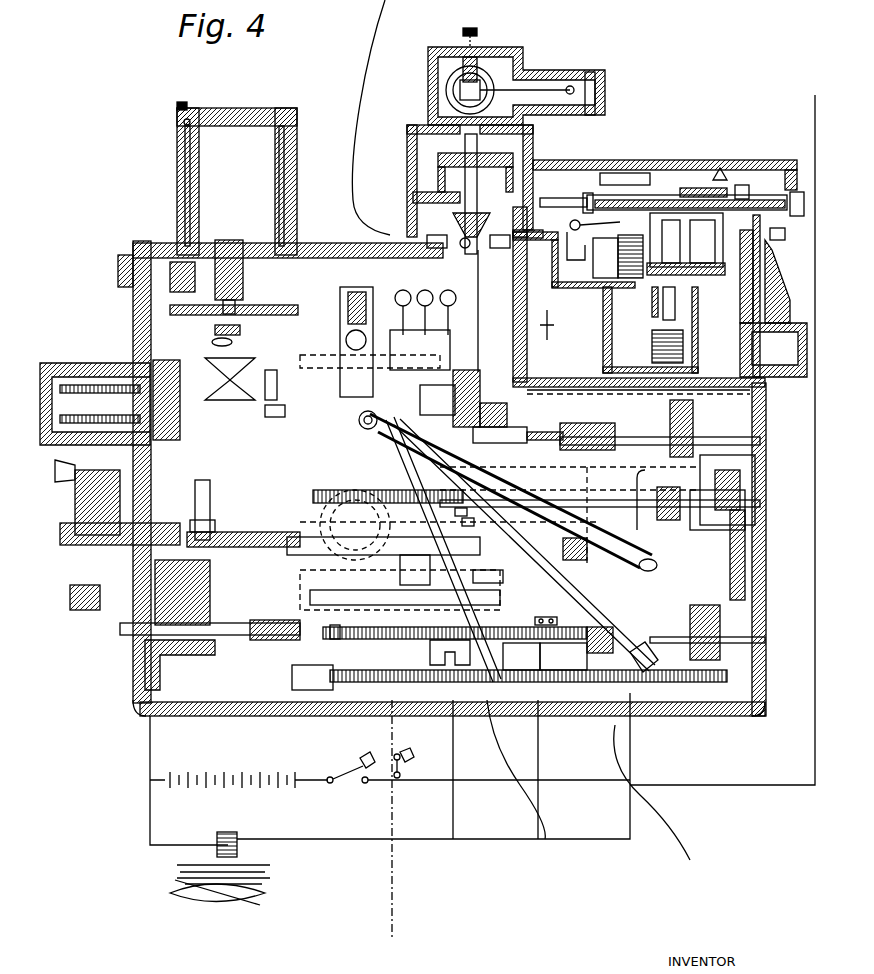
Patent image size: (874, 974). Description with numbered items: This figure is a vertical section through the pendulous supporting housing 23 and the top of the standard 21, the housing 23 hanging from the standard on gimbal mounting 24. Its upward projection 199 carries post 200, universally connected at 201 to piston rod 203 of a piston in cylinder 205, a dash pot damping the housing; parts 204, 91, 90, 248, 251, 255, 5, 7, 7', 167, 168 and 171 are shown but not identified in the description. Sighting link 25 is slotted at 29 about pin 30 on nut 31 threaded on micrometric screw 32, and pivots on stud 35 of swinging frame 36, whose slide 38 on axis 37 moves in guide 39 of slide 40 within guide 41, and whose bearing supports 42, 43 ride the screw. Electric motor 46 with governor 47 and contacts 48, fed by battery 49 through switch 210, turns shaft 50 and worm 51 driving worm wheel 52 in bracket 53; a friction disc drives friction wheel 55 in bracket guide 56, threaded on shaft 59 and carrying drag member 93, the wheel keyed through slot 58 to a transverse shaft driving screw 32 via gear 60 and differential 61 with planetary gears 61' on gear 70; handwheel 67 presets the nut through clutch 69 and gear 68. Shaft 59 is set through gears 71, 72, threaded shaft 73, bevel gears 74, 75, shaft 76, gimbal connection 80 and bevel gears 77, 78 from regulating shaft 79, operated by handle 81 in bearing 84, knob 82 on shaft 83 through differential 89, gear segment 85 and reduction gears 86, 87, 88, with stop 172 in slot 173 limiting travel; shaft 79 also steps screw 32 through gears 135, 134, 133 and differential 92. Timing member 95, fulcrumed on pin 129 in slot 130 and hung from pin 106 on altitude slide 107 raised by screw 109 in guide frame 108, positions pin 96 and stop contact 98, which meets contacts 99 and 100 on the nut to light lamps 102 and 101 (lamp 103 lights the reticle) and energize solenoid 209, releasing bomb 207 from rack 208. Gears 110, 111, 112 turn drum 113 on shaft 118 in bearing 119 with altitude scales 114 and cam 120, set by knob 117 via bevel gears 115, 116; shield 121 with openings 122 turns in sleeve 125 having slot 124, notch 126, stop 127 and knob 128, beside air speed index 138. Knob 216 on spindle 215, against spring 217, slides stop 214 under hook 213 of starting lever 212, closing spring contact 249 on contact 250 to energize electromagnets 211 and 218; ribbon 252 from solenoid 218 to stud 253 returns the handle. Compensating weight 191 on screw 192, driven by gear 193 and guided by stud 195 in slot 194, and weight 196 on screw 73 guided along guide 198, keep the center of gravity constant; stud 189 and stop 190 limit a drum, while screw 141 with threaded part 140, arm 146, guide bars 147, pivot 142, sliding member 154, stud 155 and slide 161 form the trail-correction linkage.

The adjusting knob 201 is at (486, 78).
The connecting rod 203 is at (530, 88).
The piston 204 is at (600, 80).
The pressure gauge 200 is at (452, 95).
The cylinder 205 is at (606, 96).
The housing wall 199 is at (407, 145).
The valve housing 21 is at (534, 142).
The diaphragm 78 is at (530, 154).
The plate 250 is at (612, 172).
The cover plate 214 is at (628, 160).
The plate 249 is at (652, 172).
The wedge 88 is at (720, 170).
The lever 172 is at (730, 175).
The lever 173 is at (735, 188).
The plate 84 is at (700, 188).
The block 91 is at (745, 185).
The spring 217 is at (770, 195).
The shaft 215 is at (780, 195).
The knob 216 is at (800, 195).
The bracket 90 is at (785, 237).
The rod 83 is at (762, 268).
The arm 81 is at (775, 290).
The arm 89 is at (778, 312).
The bearing housing 82 is at (780, 378).
The wall 77 is at (405, 212).
The wall 110 is at (407, 228).
The valve 24 is at (460, 245).
The valve stem 80 is at (478, 250).
The pipe 79 is at (560, 198).
The bracket 212 is at (588, 193).
The arm 248 is at (570, 224).
The coil 213 is at (620, 250).
The solenoid 211 is at (620, 268).
The contact 251 is at (670, 240).
The relay 85 is at (693, 232).
The contact 253 is at (690, 245).
The plate 86 is at (680, 275).
The armature 252 is at (652, 300).
The plunger 87 is at (652, 310).
The coil 218 is at (652, 347).
The shaft 5 is at (547, 337).
The partition wall 23 is at (527, 378).
The rod 76 is at (479, 311).
The lamp 103 is at (403, 290).
The lamp 102 is at (429, 287).
The lamp 101 is at (454, 287).
The spring 108 is at (348, 295).
The housing 109 is at (345, 305).
The plunger 107 is at (342, 320).
The roller 106 is at (346, 340).
The plate 41 is at (330, 357).
The lever 95 is at (385, 380).
The bracket 38 is at (415, 370).
The block 39 is at (426, 395).
The bearing block 75 is at (482, 395).
The bar 198 is at (533, 394).
The bearing 72 is at (685, 407).
The shaft 74 is at (498, 443).
The threaded shaft 196 is at (550, 442).
The shaft 73 is at (623, 448).
The gear 71 is at (678, 495).
The clutch 92 is at (745, 480).
The bearing 133 is at (756, 480).
The bracket 134 is at (746, 530).
The bracket 135 is at (745, 615).
The bearing 193 is at (755, 690).
The cap 128 is at (295, 108).
The screw 127 is at (180, 122).
The flange 126 is at (182, 135).
The sleeve 114 is at (182, 168).
The inner wall 122 is at (180, 182).
The outer wall 124 is at (177, 215).
The cylinder head 125 is at (297, 138).
The cylinder 121 is at (297, 182).
The bore 113 is at (198, 230).
The passage 115 is at (212, 255).
The piston 118 is at (230, 242).
The passage 111 is at (300, 245).
The valve 112 is at (283, 258).
The valve 116 is at (190, 281).
The piston rod 119 is at (236, 305).
The fitting 117 is at (120, 258).
The clutch housing 138 is at (45, 363).
The spring 189 is at (68, 373).
The shaft 7 is at (77, 351).
The bar 120 is at (170, 315).
The disc 167 is at (222, 340).
The block 168 is at (240, 330).
The arm 171 is at (285, 300).
The valve 154 is at (210, 368).
The disc 155 is at (272, 390).
The plate 40 is at (290, 385).
The shaft 7' is at (284, 380).
The disc 142 is at (285, 412).
The lever 37 is at (300, 433).
The lever 36 is at (300, 456).
The pivot 35 is at (365, 430).
The gear 140 is at (72, 394).
The gear 190 is at (94, 394).
The gear 141 is at (122, 394).
The block 146 is at (180, 430).
The block 147 is at (175, 445).
The rod 161 is at (240, 415).
The shaft 68 is at (165, 495).
The bearing 69 is at (76, 499).
The post 60 is at (210, 515).
The spring 59 is at (330, 490).
The gear 52 is at (322, 520).
The gear 93 is at (325, 530).
The collar 129 is at (445, 520).
The collar 130 is at (455, 530).
The shaft 56 is at (440, 538).
The shaft 58 is at (470, 545).
The shaft 25 is at (505, 540).
The pad 47 is at (645, 548).
The lever 29 is at (555, 578).
The block 46 is at (505, 577).
The gear 53 is at (312, 562).
The block 55 is at (420, 566).
The bearing 61 is at (226, 575).
The bearing 61' is at (226, 595).
The bracket 67 is at (85, 612).
The bracket 70 is at (150, 665).
The bar 42 is at (270, 640).
The box 191 is at (312, 665).
The pad 51 is at (335, 640).
The spring 192 is at (375, 670).
The bar 50 is at (395, 605).
The contact 96 is at (535, 620).
The pad 32 is at (515, 643).
The pad 31 is at (565, 645).
The block 30 is at (590, 652).
The pad 48 is at (658, 652).
The block 43 is at (700, 655).
The spring 194 is at (356, 683).
The spring 98 is at (445, 682).
The spring 99 is at (590, 684).
The spring 100 is at (605, 683).
The plate 195 is at (300, 700).
The battery 49 is at (240, 772).
The switch 210 is at (345, 780).
The contact 255 is at (412, 758).
The coil 209 is at (217, 845).
The filter 208 is at (270, 872).
The lens 207 is at (240, 905).